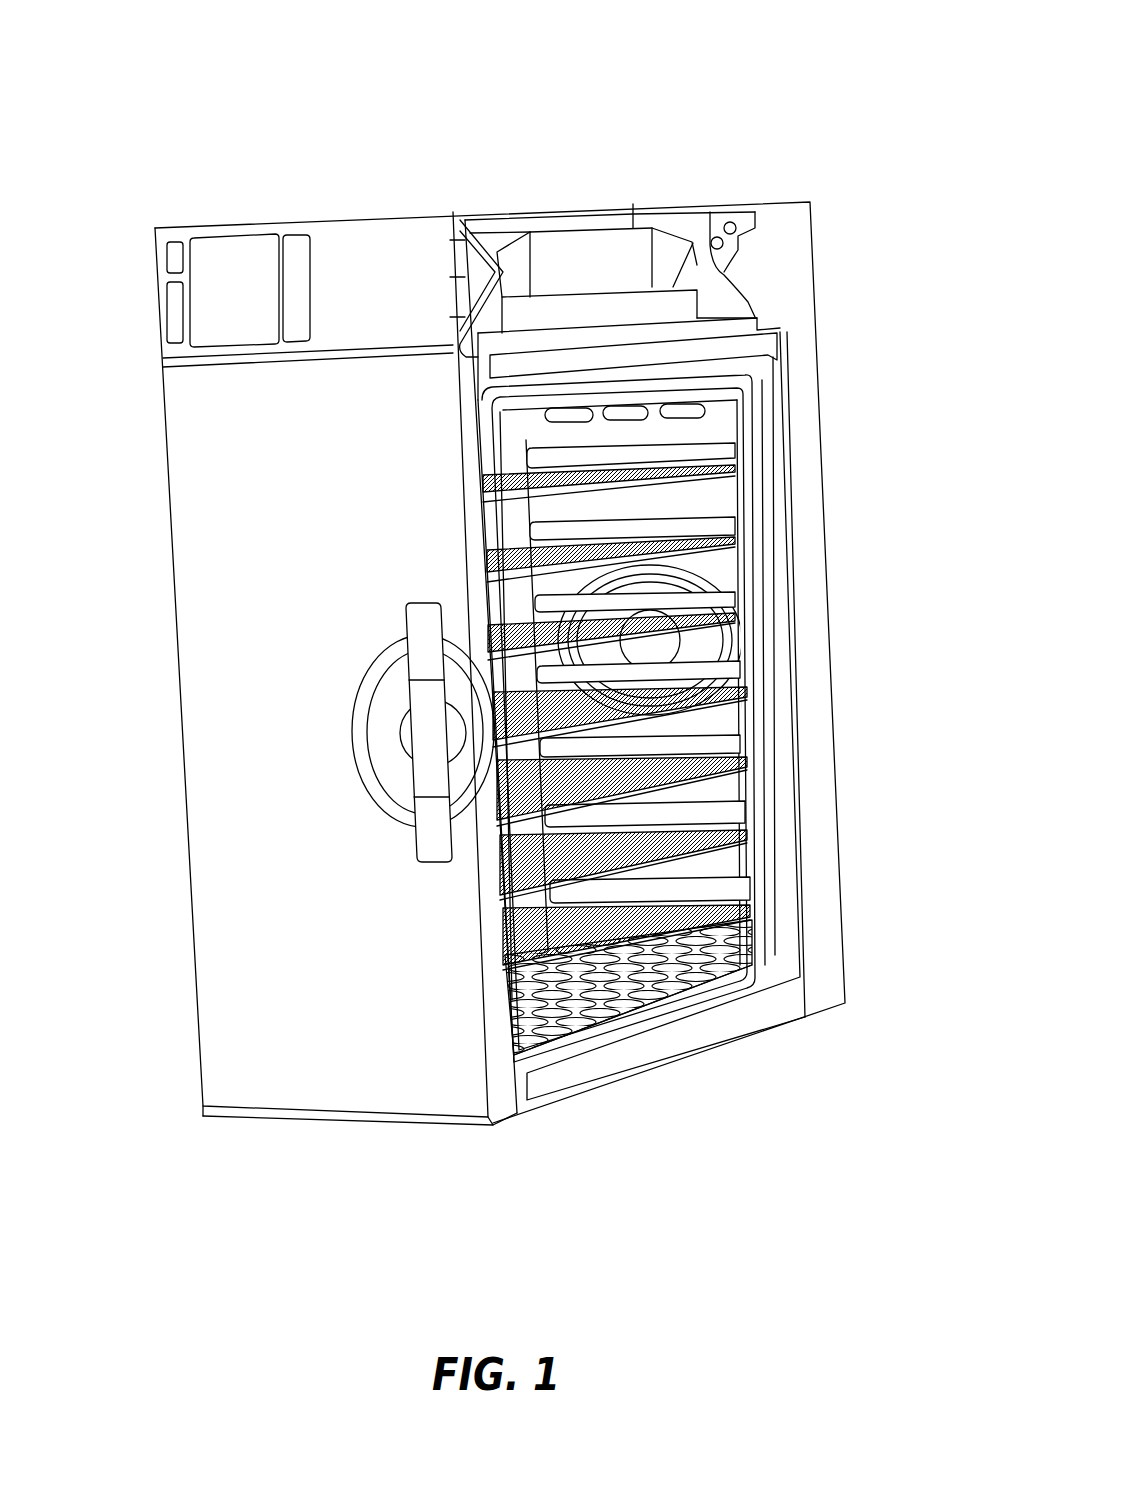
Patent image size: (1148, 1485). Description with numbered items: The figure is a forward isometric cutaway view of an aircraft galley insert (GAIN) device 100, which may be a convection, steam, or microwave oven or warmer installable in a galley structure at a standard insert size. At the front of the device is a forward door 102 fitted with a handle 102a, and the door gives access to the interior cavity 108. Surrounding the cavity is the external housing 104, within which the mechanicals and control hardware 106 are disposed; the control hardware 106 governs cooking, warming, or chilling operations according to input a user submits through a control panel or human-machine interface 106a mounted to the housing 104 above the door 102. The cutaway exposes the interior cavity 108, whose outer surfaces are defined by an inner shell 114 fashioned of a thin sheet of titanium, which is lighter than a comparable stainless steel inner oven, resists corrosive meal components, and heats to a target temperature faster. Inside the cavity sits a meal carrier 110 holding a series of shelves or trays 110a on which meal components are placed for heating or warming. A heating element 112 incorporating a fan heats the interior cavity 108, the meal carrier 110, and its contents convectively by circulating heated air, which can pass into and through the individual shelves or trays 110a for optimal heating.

The aircraft galley insert (GAIN) device 100 is at (146, 84).
The forward door 102 is at (247, 602).
The handle 102a is at (428, 722).
The external housing 104 is at (380, 207).
The mechanicals and control hardware 106 is at (618, 252).
The control panel or human-machine interface (HMI) 106a is at (245, 280).
The interior cavity 108 is at (706, 495).
The meal carrier 110 is at (708, 680).
The shelves or trays 110a is at (683, 828).
The heating element 112 is at (700, 648).
The inner shell 114 is at (777, 958).